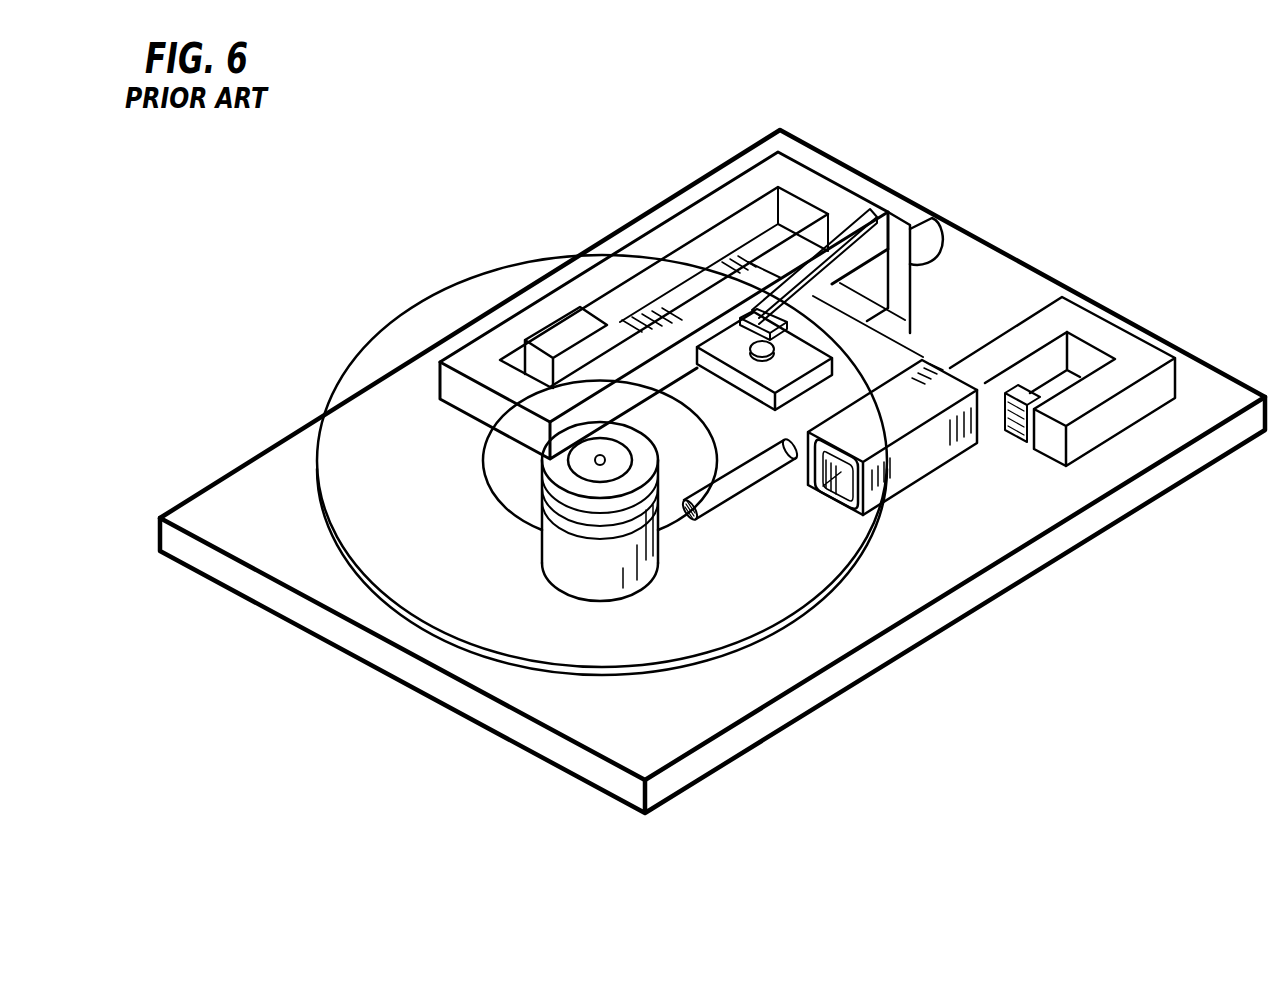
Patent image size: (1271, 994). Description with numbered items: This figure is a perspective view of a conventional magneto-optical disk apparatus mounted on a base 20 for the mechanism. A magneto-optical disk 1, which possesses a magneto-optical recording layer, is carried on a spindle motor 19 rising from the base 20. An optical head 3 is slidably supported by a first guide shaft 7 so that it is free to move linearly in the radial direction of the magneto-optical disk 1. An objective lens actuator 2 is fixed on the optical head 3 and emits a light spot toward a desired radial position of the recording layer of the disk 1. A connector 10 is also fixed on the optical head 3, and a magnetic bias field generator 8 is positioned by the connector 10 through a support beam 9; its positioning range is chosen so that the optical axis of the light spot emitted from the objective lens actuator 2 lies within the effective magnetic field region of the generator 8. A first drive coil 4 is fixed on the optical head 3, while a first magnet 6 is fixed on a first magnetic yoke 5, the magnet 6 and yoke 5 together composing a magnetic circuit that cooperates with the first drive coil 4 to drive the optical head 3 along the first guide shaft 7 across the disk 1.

The magneto-optical disk 1 is at (453, 608).
The objective lens actuator 2 is at (783, 367).
The optical head 3 is at (886, 372).
The first drive coil 4 is at (948, 436).
The first magnetic yoke 5 is at (485, 367).
The first magnet 6 is at (548, 340).
The first guide shaft 7 is at (743, 480).
The magnetic bias field generator 8 is at (757, 323).
The support beam 9 is at (827, 260).
The connector 10 is at (903, 262).
The spindle motor 19 is at (595, 573).
The base 20 is at (627, 742).